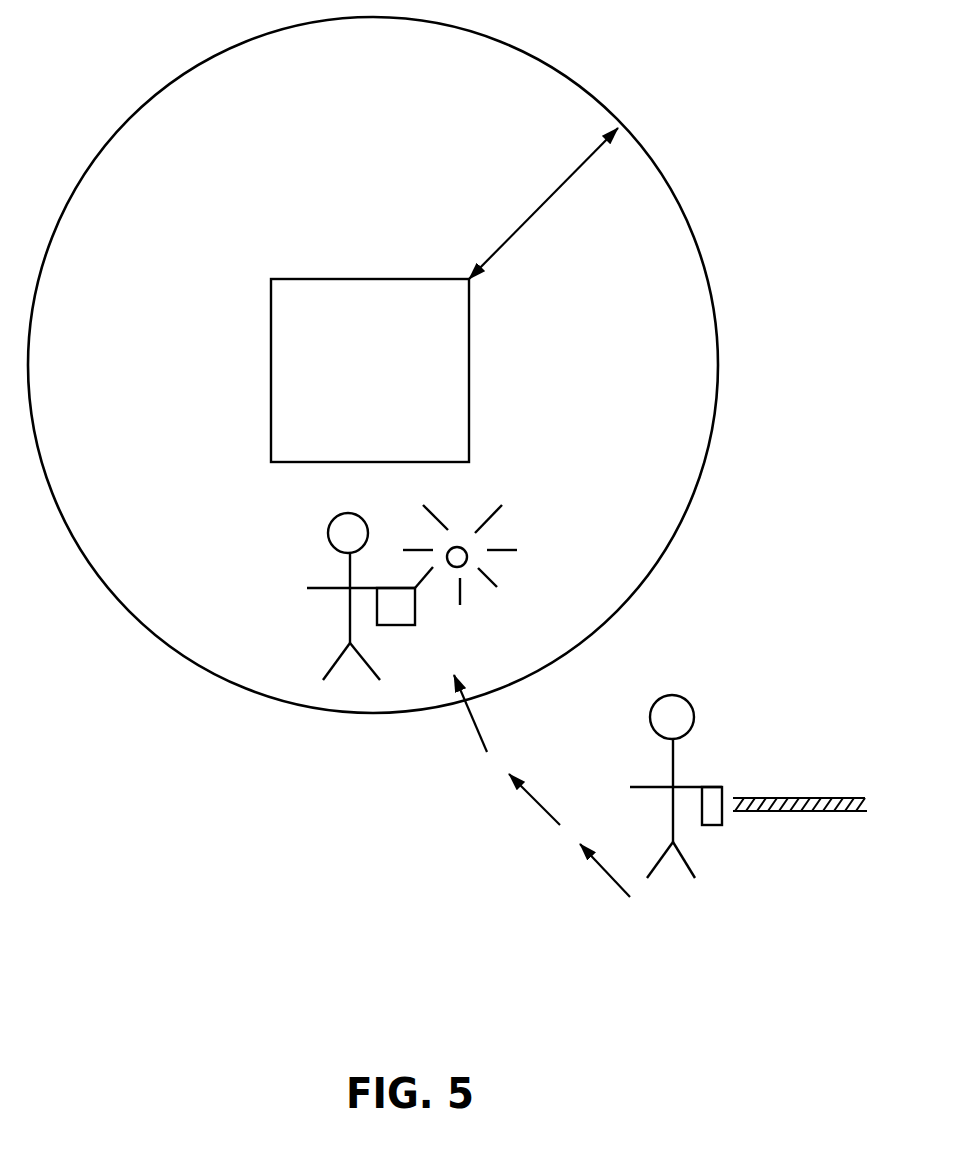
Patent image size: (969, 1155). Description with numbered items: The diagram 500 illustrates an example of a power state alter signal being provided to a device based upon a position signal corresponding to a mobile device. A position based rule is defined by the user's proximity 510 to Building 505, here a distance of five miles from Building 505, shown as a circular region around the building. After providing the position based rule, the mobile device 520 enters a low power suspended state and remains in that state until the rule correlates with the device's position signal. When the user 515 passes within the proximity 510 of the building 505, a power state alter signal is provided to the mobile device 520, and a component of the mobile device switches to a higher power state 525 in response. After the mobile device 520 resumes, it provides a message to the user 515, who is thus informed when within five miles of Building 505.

The diagram 500 is at (373, 362).
The Building 505 is at (370, 370).
The proximity 510 is at (568, 178).
The user 515 is at (694, 718).
The mobile device 520 is at (767, 812).
The higher power state 525 is at (530, 523).